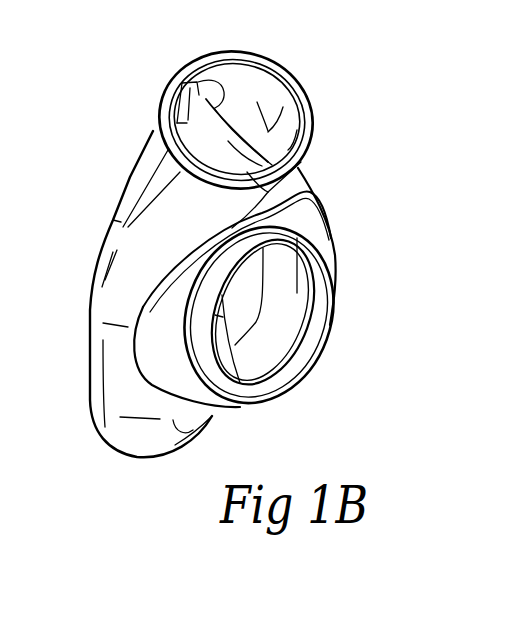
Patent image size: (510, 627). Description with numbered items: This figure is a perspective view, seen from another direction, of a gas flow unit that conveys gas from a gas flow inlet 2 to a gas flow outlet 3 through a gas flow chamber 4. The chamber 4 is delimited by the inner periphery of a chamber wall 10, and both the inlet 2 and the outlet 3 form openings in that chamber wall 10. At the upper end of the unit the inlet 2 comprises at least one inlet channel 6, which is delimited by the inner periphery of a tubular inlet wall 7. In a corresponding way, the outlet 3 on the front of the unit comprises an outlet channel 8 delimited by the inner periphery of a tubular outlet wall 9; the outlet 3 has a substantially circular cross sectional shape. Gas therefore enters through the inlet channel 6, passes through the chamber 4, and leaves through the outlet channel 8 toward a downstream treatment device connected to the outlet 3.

The gas flow inlet 2 is at (264, 84).
The gas flow outlet 3 is at (312, 296).
The gas flow chamber 4 is at (250, 328).
The inlet channel 6 is at (222, 98).
The tubular inlet wall 7 is at (307, 118).
The outlet channel 8 is at (215, 372).
The tubular outlet wall 9 is at (331, 267).
The chamber wall 10 is at (97, 272).